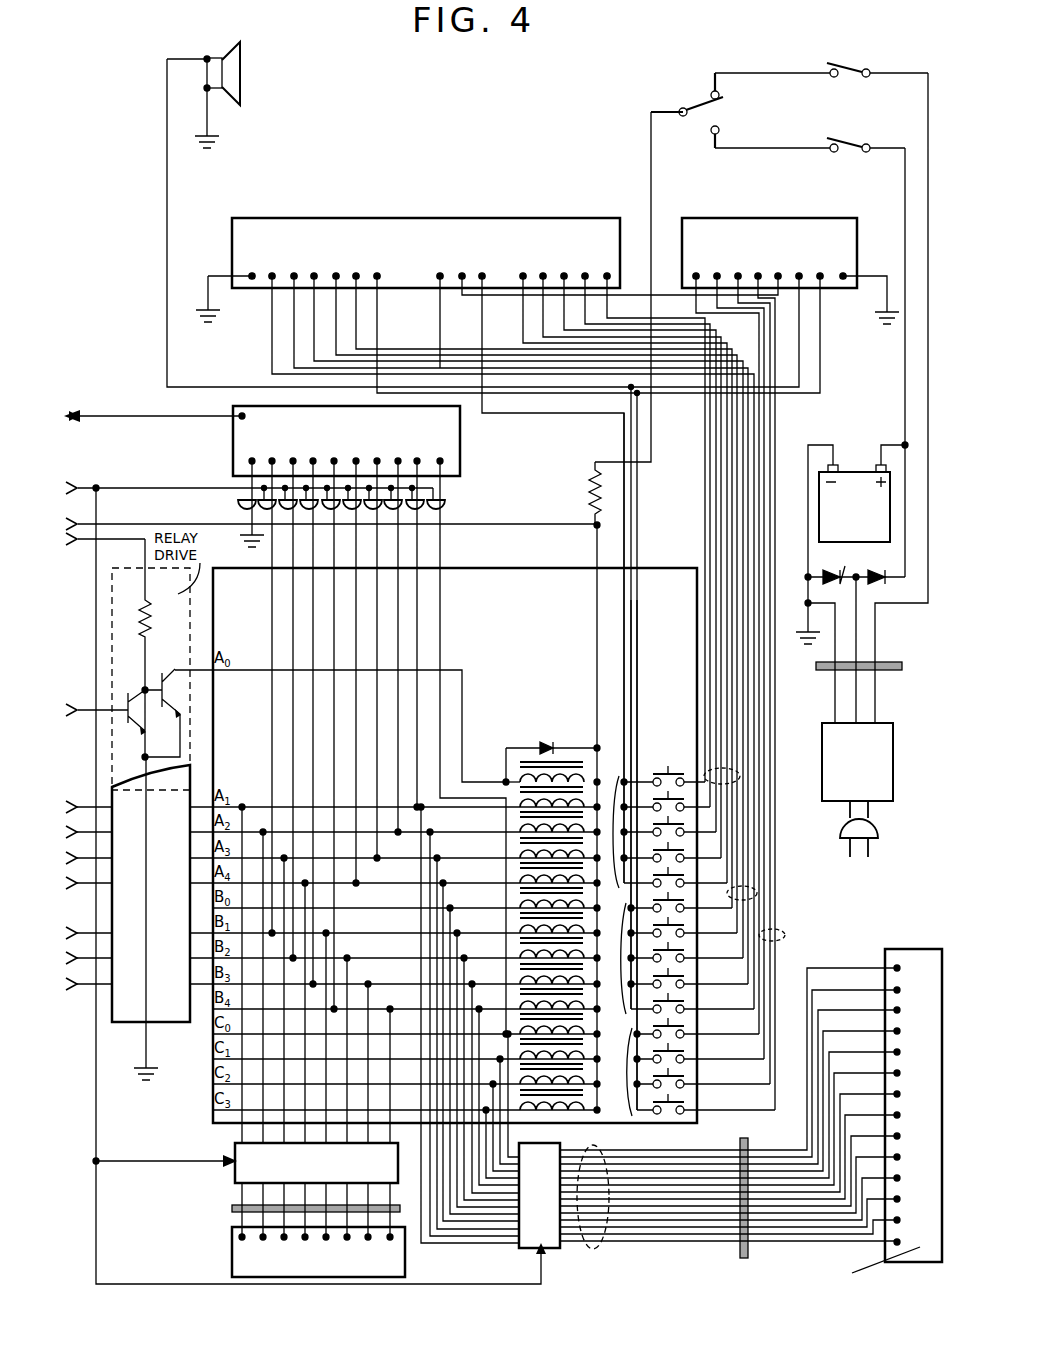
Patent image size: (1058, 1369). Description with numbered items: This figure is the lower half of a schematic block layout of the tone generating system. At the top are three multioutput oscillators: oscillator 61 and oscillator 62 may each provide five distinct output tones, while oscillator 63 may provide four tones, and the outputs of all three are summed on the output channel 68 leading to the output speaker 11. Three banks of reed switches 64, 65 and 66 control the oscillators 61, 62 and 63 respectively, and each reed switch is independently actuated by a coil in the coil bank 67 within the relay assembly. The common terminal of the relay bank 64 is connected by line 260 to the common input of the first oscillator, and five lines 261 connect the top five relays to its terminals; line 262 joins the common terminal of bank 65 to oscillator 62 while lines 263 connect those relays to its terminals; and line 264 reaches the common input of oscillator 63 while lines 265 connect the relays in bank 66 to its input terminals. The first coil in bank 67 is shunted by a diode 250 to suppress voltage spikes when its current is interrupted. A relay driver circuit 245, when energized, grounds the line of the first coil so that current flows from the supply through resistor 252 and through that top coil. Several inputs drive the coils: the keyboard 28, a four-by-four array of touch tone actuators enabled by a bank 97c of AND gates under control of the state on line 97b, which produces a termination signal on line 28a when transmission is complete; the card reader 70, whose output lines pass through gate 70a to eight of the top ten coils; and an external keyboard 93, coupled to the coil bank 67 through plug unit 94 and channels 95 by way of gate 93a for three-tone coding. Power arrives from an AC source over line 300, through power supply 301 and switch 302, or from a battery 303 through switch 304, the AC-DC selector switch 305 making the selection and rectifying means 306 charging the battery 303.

The output speaker 11 is at (242, 88).
The oscillator 62 is at (275, 235).
The oscillator 61 is at (548, 230).
The oscillator 63 is at (725, 235).
The switch 302 is at (848, 64).
The AC-DC selector switch 305 is at (712, 100).
The switch 304 is at (845, 139).
The output channel 68 is at (492, 416).
The keyboard 28 is at (462, 468).
The line 28a is at (155, 414).
The line 97b is at (174, 487).
The bank of AND gates 97c is at (446, 501).
The resistor 252 is at (590, 494).
The battery 303 is at (870, 525).
The rectifying means 306 is at (866, 560).
The line 260 is at (626, 627).
The line 262 is at (633, 657).
The line 264 is at (639, 690).
The diode 250 is at (546, 740).
The bank of reed switches 64 is at (663, 822).
The bank of reed switches 65 is at (677, 953).
The bank of reed switches 66 is at (686, 1067).
The lines 261 is at (740, 780).
The lines 263 is at (757, 900).
The lines 265 is at (785, 937).
The power supply 301 is at (892, 782).
The line 300 is at (870, 824).
The external keyboard 93 is at (912, 952).
The plug unit 94 is at (748, 1140).
The channels 95 is at (600, 1150).
The gate 93a is at (556, 1250).
The gate 70a is at (236, 1172).
The card reader unit 70 is at (232, 1253).
The relay driver circuit 245 is at (165, 728).
The bank of coils 67 is at (516, 661).